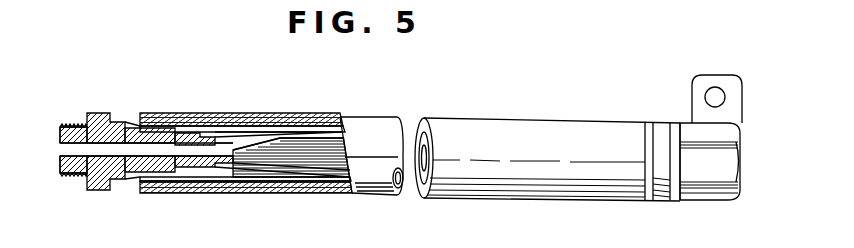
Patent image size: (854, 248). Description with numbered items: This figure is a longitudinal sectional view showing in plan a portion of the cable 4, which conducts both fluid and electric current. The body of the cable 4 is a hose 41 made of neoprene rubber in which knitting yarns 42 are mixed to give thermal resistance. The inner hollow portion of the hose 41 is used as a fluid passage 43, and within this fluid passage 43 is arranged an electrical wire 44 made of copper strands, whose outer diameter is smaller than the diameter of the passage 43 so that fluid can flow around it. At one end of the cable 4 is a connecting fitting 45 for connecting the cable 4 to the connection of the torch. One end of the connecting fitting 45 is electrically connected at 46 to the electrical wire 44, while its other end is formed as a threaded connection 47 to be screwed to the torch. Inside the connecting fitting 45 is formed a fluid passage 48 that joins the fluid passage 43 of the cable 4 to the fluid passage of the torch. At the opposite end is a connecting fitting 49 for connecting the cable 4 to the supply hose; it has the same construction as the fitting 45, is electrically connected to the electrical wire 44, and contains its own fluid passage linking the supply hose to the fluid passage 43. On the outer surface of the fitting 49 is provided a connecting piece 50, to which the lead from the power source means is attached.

The cable 4 is at (437, 117).
The hose 41 is at (322, 118).
The knitting yarns 42 is at (258, 118).
The fluid passage 43 is at (290, 176).
The electrical wire 44 is at (316, 160).
The connecting fitting 45 is at (95, 193).
The electrical connection 46 is at (247, 162).
The connection 47 is at (73, 177).
The fluid passage 48 is at (162, 160).
The connecting fitting 49 is at (713, 200).
The connecting piece 50 is at (710, 76).